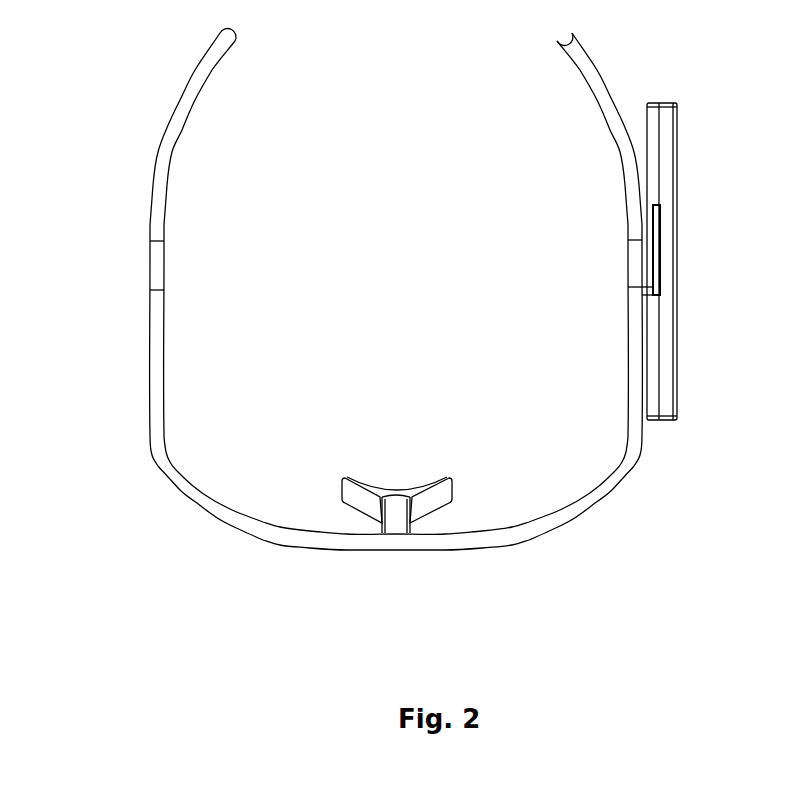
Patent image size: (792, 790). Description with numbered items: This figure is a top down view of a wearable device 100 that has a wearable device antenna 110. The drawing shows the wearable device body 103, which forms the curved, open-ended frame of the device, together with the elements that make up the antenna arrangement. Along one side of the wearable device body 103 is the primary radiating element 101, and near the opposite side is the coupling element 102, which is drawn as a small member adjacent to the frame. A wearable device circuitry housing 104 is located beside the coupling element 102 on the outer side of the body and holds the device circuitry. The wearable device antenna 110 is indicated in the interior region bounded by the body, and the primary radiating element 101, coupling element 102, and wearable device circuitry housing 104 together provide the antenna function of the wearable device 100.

The wearable device 100 is at (465, 289).
The primary radiating element 101 is at (153, 348).
The coupling element 102 is at (656, 250).
The wearable device body 103 is at (162, 153).
The wearable device circuitry housing 104 is at (668, 173).
The wearable device antenna 110 is at (510, 388).